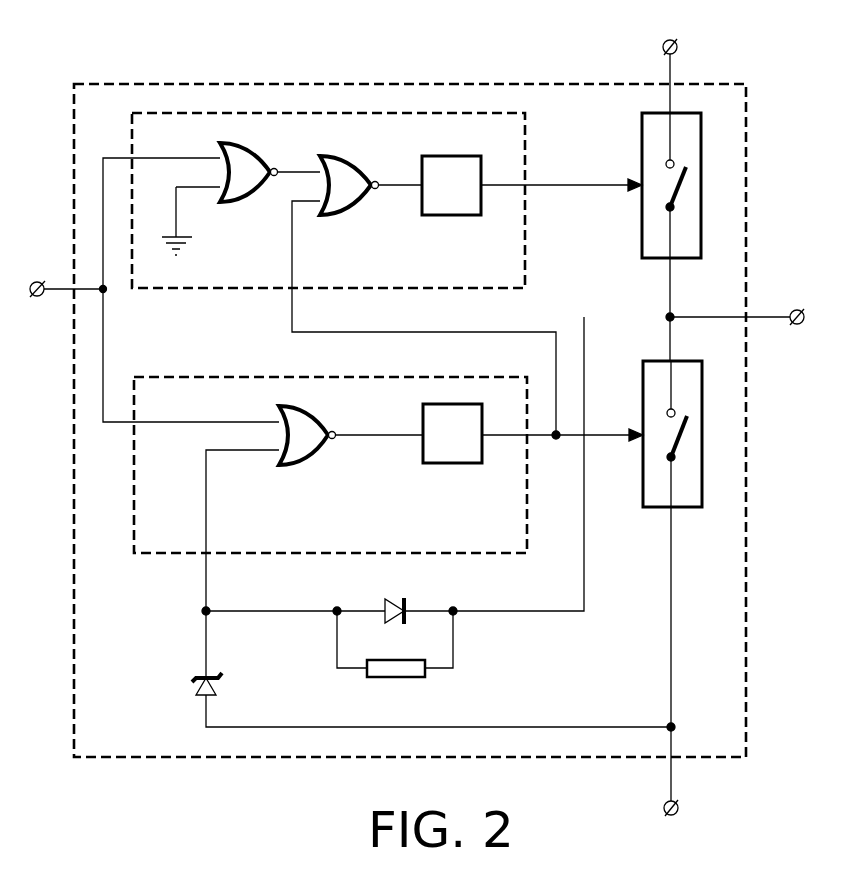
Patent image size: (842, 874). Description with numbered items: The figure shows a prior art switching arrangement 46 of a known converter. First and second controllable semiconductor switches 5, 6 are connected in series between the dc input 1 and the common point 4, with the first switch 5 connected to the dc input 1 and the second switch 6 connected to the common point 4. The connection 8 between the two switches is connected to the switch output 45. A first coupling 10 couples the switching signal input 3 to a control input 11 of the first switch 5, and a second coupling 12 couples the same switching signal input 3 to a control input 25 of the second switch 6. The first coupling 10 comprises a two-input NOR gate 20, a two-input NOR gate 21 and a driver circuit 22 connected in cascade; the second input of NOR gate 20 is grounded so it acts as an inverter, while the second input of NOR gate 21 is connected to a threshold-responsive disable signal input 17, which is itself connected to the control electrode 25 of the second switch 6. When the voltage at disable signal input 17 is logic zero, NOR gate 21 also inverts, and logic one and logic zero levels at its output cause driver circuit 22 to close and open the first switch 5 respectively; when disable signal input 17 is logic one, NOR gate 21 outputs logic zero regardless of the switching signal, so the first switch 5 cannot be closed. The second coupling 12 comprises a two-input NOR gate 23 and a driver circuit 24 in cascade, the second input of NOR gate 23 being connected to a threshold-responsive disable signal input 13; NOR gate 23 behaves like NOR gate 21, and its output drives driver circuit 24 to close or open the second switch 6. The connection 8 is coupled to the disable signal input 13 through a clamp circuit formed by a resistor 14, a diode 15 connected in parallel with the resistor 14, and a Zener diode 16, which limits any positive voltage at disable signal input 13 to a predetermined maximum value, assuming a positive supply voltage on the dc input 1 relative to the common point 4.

The dc input 1 is at (661, 43).
The switching signal input 3 is at (40, 280).
The common point 4 is at (663, 805).
The first controllable semiconductor switch 5 is at (641, 231).
The second controllable semiconductor switch 6 is at (642, 480).
The connection between the switches 8 is at (668, 290).
The first coupling 10 is at (217, 113).
The control input of the first switch 11 is at (640, 180).
The second coupling 12 is at (165, 377).
The threshold-responsive disable signal input 13 is at (204, 558).
The resistor 14 is at (400, 683).
The diode 15 is at (408, 603).
The Zener diode 16 is at (196, 688).
The threshold-responsive disable signal input 17 is at (290, 298).
The two-input NOR gate 20 is at (238, 206).
The two-input NOR gate 21 is at (345, 218).
The driver circuit 22 is at (449, 218).
The two-input NOR gate 23 is at (298, 468).
The driver circuit 24 is at (450, 466).
The control input of the second switch 25 is at (641, 430).
The switch output 45 is at (795, 309).
The switching arrangement 46 is at (134, 84).